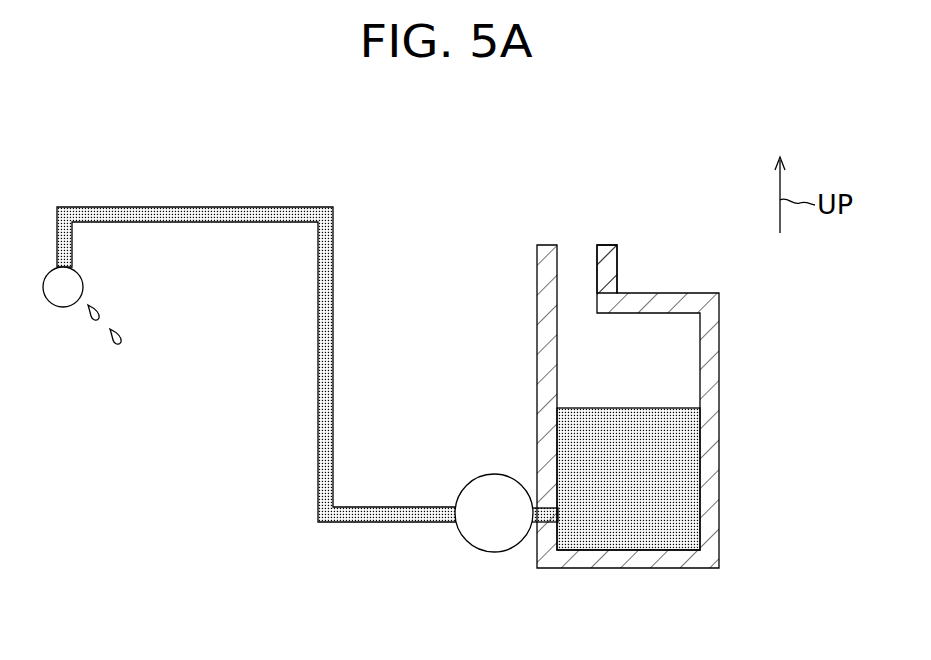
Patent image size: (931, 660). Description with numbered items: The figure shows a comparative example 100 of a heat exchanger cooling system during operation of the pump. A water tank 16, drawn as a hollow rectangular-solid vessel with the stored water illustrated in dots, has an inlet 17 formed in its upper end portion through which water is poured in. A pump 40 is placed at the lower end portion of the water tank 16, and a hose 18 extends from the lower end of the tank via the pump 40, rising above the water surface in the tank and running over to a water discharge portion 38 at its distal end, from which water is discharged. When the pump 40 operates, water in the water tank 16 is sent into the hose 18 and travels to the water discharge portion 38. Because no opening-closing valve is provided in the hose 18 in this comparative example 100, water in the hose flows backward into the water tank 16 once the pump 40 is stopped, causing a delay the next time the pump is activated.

The comparative example 100 is at (423, 158).
The hose 18 is at (333, 333).
The water discharge portion 38 is at (65, 306).
The water tank 16 is at (719, 358).
The inlet 17 is at (597, 268).
The pump 40 is at (494, 553).